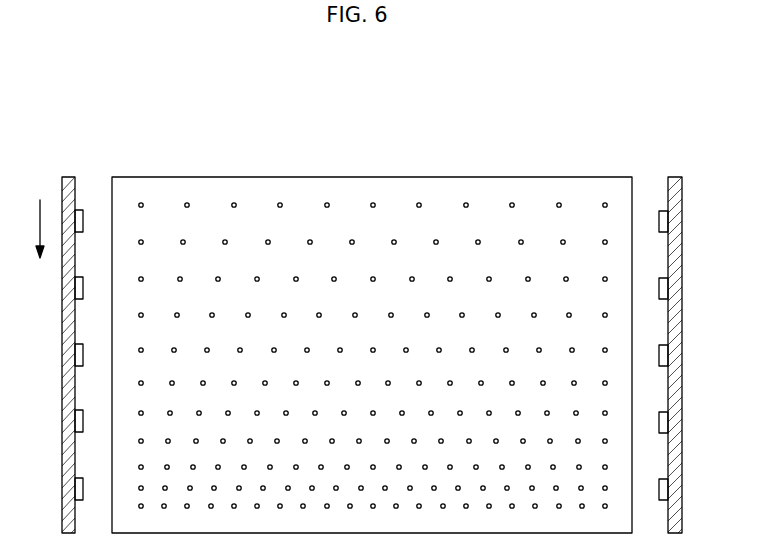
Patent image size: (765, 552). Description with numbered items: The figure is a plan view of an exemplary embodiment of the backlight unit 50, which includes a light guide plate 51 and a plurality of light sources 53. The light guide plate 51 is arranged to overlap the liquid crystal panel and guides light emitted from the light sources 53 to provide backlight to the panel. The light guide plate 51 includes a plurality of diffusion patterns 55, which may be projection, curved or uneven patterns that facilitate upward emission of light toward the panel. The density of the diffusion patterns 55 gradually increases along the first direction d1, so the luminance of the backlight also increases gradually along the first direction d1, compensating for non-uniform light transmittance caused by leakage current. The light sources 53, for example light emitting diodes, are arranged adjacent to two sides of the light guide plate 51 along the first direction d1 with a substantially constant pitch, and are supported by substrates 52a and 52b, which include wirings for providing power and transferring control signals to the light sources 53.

The backlight unit 50 is at (453, 118).
The light guide plate 51 is at (370, 177).
The diffusion patterns 55 is at (186, 202).
The substrate 52a is at (70, 176).
The substrate 52b is at (674, 176).
The light sources 53 is at (81, 219).
The first direction d1 is at (26, 229).